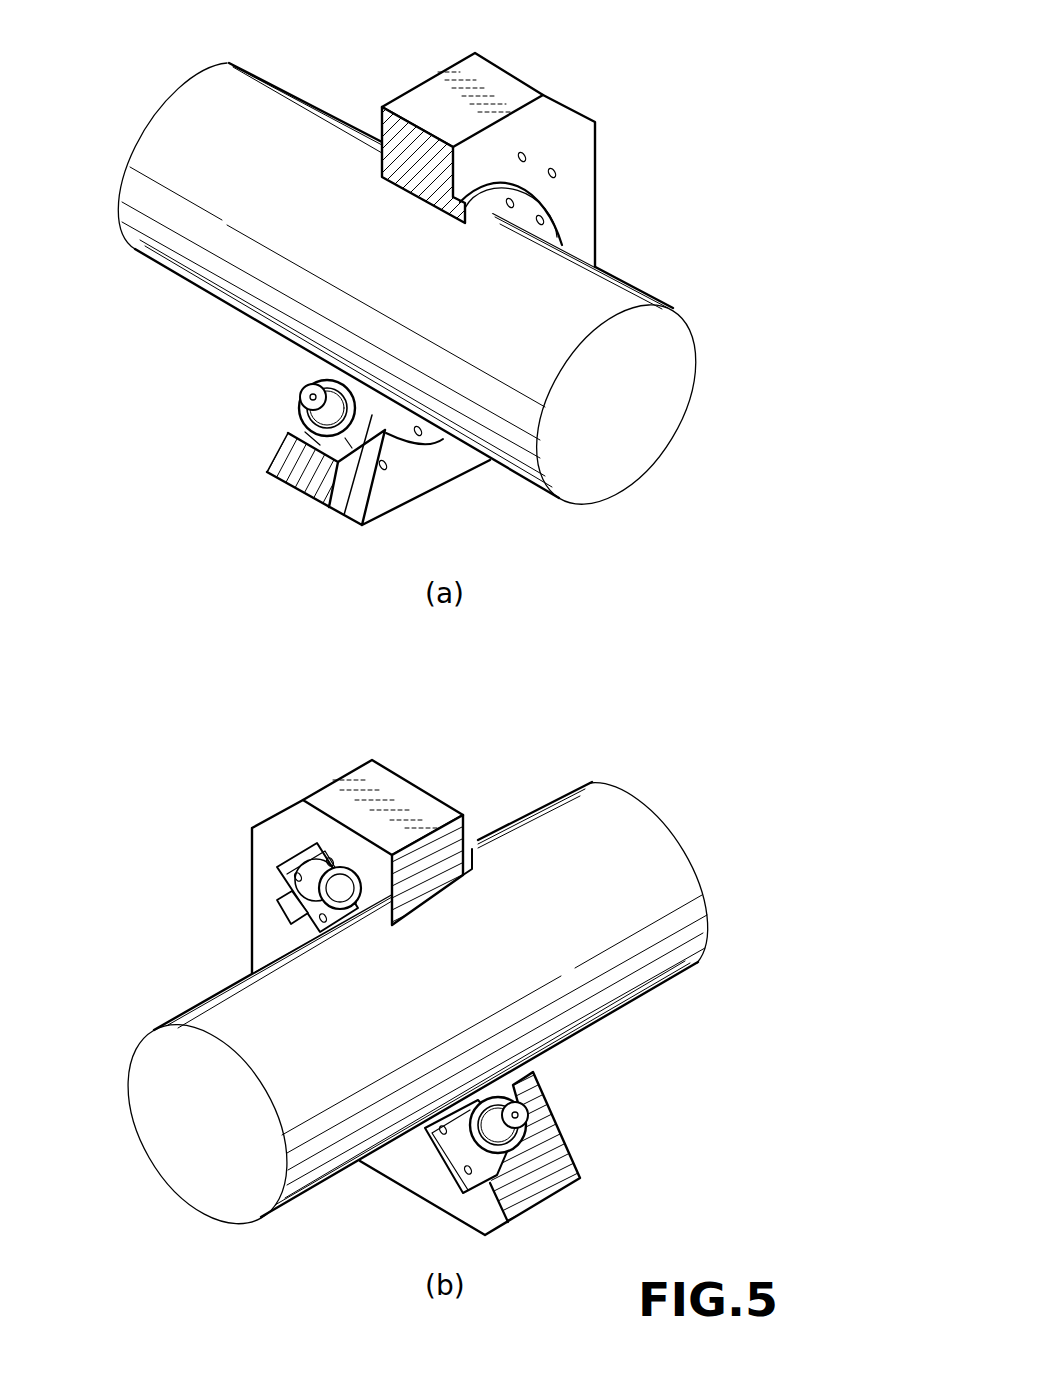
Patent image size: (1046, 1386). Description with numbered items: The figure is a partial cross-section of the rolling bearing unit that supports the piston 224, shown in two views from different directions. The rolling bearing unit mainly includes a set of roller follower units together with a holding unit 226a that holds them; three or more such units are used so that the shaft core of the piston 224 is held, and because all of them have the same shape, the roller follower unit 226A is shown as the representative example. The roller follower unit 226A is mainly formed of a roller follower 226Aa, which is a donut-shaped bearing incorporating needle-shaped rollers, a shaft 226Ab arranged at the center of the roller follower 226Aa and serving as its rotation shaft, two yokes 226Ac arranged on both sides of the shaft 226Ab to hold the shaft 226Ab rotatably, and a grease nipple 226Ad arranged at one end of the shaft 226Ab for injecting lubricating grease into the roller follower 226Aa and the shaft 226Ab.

The piston 224 is at (625, 304).
The holding unit 226a is at (440, 88).
The roller follower unit 226A is at (300, 409).
The roller follower 226Aa is at (327, 437).
The shaft 226Ab is at (303, 393).
The yokes 226Ac is at (277, 866).
The grease nipple 226Ad is at (280, 901).